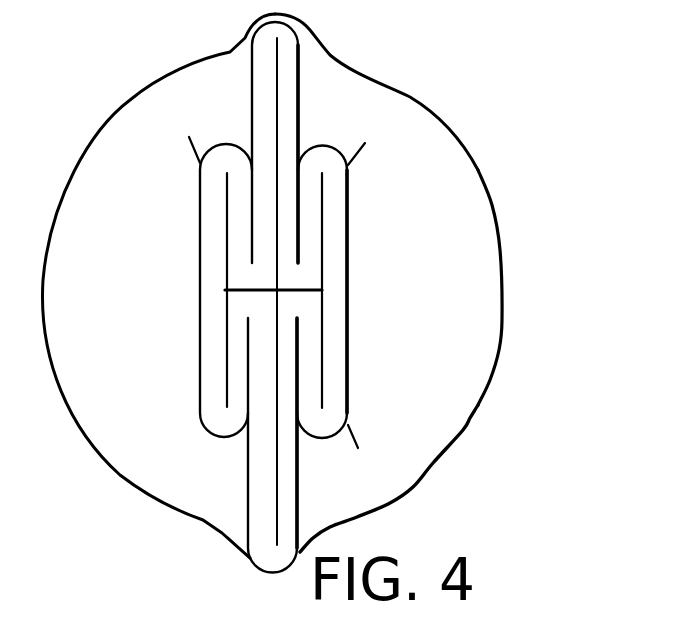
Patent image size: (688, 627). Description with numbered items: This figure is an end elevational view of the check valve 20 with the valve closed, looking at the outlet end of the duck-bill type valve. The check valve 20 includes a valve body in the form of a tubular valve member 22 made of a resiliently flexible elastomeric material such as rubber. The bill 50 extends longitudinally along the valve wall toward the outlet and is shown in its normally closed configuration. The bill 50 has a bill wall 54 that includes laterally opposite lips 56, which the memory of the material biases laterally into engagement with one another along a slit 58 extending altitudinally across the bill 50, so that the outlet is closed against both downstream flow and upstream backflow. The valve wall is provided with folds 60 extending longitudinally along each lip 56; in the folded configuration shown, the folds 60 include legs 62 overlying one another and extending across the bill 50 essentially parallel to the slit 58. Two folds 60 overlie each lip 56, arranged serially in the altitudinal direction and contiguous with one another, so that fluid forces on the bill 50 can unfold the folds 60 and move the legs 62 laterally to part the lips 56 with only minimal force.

The check valve 20 is at (317, 286).
The tubular valve member 22 is at (473, 267).
The bill 50 is at (393, 445).
The bill wall 54 is at (470, 347).
The lips 56 is at (247, 478).
The slit 58 is at (281, 118).
The folds 60 is at (200, 245).
The legs 62 is at (235, 208).